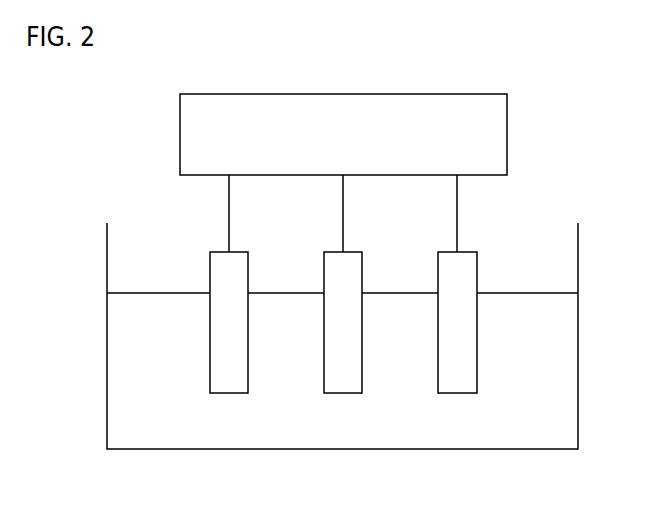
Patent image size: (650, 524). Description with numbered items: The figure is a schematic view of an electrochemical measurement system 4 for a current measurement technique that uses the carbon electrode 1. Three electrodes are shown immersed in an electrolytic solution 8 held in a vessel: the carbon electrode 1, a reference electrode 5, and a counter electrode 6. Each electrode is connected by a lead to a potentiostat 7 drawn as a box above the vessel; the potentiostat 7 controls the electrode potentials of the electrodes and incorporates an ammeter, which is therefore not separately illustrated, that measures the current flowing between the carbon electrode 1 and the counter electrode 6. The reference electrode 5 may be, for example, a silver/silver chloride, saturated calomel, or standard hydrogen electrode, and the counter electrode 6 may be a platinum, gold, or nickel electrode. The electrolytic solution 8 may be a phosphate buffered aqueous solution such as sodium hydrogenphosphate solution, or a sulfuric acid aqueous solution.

The carbon electrode 1 is at (209, 273).
The electrochemical measurement system 4 is at (342, 358).
The reference electrode 5 is at (322, 270).
The counter electrode 6 is at (437, 270).
The potentiostat 7 is at (432, 94).
The electrolytic solution 8 is at (519, 292).